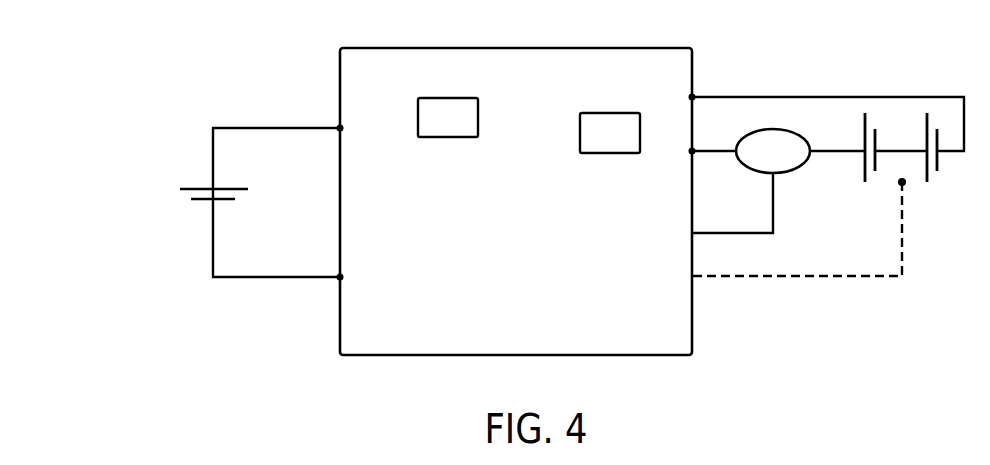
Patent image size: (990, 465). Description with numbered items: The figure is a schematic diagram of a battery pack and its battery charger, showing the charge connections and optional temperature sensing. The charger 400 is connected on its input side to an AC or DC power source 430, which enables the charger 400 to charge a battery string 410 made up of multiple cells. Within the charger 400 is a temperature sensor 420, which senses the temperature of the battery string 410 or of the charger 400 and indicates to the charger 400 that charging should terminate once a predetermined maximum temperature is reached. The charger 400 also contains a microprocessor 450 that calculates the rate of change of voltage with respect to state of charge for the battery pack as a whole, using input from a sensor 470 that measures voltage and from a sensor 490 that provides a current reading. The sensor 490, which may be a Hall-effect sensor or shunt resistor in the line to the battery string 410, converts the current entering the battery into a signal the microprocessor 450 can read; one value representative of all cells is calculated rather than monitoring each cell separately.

The charger 400 is at (487, 240).
The battery string 410 is at (828, 96).
The temperature sensor 420 is at (727, 253).
The AC or DC power source 430 is at (204, 202).
The microprocessor 450 is at (448, 117).
The voltage sensor 470 is at (610, 133).
The current sensor 490 is at (751, 181).